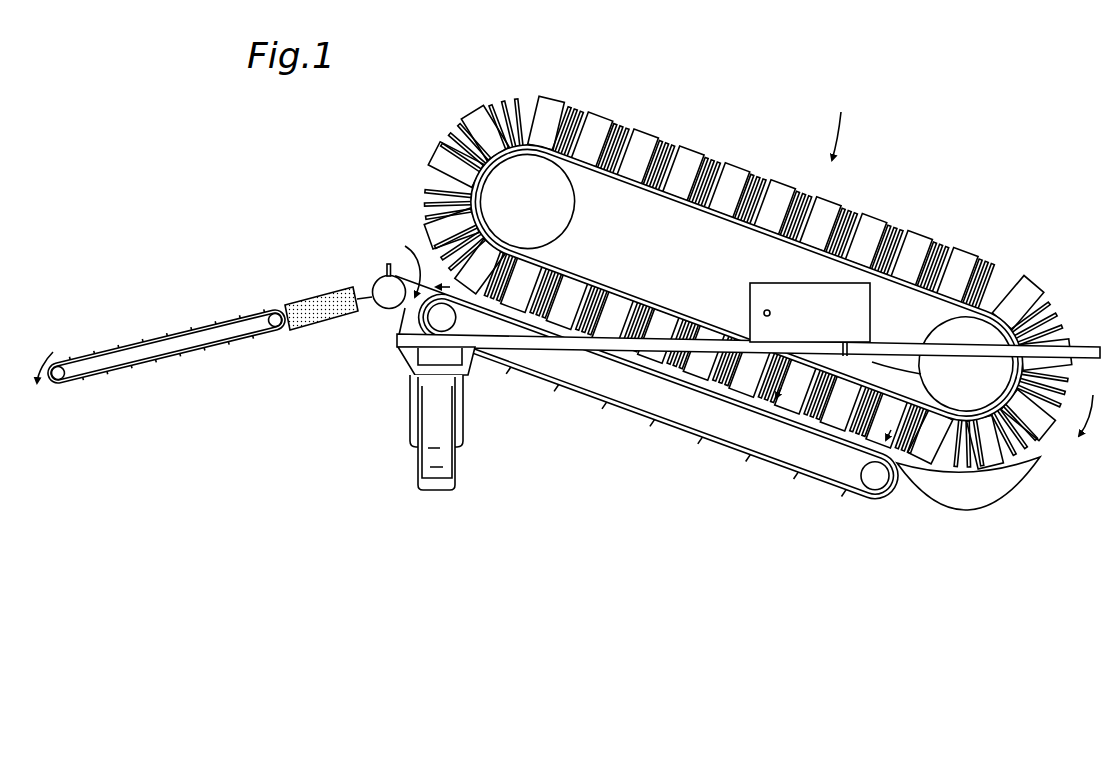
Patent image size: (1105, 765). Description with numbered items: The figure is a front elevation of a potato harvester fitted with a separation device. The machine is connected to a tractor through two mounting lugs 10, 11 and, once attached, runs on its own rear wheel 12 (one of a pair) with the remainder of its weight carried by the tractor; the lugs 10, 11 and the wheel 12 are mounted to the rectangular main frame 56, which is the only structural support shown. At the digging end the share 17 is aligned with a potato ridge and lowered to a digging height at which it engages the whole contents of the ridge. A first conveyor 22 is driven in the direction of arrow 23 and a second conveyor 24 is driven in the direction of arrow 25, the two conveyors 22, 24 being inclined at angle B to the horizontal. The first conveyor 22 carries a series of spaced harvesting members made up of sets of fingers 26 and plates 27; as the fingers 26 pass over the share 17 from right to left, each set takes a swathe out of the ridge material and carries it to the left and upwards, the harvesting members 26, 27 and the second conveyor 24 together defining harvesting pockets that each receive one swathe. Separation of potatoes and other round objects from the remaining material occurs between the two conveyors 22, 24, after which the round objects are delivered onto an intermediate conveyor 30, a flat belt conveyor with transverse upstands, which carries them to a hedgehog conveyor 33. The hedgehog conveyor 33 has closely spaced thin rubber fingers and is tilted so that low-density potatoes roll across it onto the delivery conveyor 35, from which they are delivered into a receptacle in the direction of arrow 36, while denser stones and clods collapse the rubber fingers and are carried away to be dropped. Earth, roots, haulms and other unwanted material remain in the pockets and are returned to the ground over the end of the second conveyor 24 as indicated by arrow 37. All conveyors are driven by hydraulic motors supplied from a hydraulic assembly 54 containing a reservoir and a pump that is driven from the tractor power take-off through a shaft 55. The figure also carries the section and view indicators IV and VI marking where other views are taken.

The mounting lug 10 is at (680, 316).
The mounting lug 11 is at (847, 343).
The rear wheel 12 is at (435, 433).
The digging share 17 is at (983, 492).
The first conveyor 22 is at (851, 255).
The arrow 23 is at (1095, 395).
The second conveyor 24 is at (668, 438).
The arrow 25 is at (900, 495).
The fingers 26 is at (945, 242).
The plates 27 is at (690, 146).
The intermediate conveyor 30 is at (389, 309).
The hedgehog conveyor 33 is at (322, 292).
The delivery conveyor 35 is at (183, 330).
The arrow 36 is at (40, 357).
The arrow 37 is at (418, 260).
The hydraulic assembly 54 is at (822, 312).
The shaft 55 is at (762, 310).
The main frame 56 is at (1090, 347).
The angle B is at (904, 374).
The view VI is at (837, 124).
The section IV is at (791, 385).